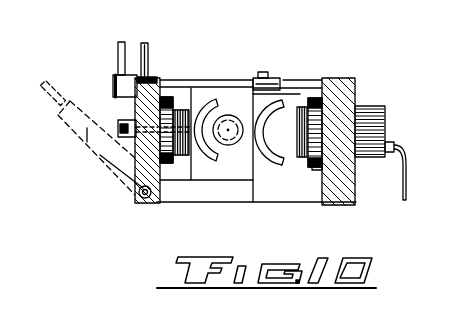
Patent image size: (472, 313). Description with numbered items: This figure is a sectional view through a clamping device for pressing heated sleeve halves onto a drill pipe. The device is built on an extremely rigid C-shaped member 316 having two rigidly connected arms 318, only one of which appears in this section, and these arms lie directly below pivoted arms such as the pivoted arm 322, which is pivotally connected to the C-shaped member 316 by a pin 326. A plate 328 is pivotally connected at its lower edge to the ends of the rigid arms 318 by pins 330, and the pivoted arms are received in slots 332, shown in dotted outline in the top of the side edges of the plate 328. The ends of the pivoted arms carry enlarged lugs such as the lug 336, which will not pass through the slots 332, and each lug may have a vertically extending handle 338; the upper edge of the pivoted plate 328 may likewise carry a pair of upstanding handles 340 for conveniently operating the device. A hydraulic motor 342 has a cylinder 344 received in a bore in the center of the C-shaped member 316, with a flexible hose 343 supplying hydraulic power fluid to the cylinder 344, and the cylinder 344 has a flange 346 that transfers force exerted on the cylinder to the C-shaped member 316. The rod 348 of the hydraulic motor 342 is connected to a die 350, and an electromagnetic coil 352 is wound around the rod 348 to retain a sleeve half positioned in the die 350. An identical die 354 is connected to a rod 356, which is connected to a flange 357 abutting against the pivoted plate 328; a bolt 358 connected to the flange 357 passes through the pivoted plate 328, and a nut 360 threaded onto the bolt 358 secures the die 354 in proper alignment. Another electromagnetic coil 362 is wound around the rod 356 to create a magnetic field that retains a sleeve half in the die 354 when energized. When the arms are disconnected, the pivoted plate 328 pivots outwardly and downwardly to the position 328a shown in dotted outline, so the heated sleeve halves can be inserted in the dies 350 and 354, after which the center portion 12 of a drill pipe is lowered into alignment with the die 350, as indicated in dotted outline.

The center portion of a drill pipe 12 is at (244, 100).
The C-shaped member 316 is at (346, 86).
The rigid arms 318 is at (219, 194).
The pivoted arm 322 is at (188, 97).
The pin 326 is at (278, 75).
The plate 328 is at (122, 178).
The position of the pivoted plate 328a is at (85, 142).
The pins 330 is at (152, 197).
The slots 332 is at (152, 77).
The enlarged lug 336 is at (116, 75).
The handle 338 is at (121, 42).
The upstanding handles 340 is at (146, 43).
The hydraulic motor 342 is at (387, 100).
The flexible hose 343 is at (412, 157).
The cylinder 344 is at (378, 130).
The flange 346 is at (317, 168).
The rod 348 is at (269, 145).
The die 350 is at (280, 110).
The electromagnetic coil 352 is at (301, 160).
The die 354 is at (215, 158).
The rod 356 is at (206, 188).
The flange 357 is at (167, 97).
The bolt 358 is at (103, 160).
The nut 360 is at (128, 120).
The electromagnetic coil 362 is at (190, 108).